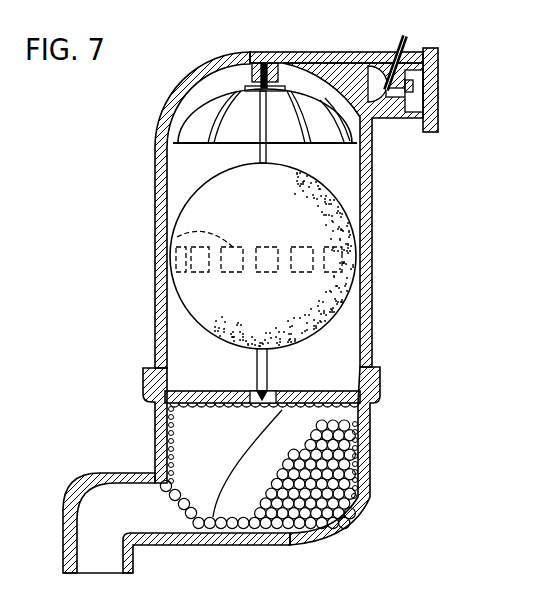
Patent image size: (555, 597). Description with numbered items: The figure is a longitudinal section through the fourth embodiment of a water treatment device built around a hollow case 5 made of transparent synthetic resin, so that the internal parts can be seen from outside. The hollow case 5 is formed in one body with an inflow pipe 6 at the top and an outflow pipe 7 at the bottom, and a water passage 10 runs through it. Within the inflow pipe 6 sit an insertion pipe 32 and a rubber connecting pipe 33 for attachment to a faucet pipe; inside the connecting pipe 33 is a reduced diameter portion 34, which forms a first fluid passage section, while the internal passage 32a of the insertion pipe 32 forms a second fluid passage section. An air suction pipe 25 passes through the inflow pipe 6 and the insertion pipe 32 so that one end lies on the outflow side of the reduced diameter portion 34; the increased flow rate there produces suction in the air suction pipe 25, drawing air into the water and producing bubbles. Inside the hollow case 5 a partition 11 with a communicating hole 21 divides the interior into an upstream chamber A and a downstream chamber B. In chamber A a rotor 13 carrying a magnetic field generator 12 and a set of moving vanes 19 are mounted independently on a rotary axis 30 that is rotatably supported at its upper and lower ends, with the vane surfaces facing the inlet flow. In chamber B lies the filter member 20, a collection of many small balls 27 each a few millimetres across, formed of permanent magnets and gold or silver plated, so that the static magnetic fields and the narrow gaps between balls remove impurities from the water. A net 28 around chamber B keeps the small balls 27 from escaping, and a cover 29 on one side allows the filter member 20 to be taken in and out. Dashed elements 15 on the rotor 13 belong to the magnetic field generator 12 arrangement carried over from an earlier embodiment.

The hollow case 5 is at (372, 322).
The inflow pipe 6 is at (330, 53).
The outflow pipe 7 is at (62, 517).
The water passage 10 is at (177, 165).
The partition 11 is at (337, 385).
The magnetic field generator 12 is at (103, 247).
The rotor 13 is at (349, 203).
The sensing elements 15 is at (200, 272).
The moving vanes 19 is at (203, 118).
The filter member 20 is at (200, 481).
The communicating hole 21 is at (242, 412).
The air suction pipe 25 is at (412, 42).
The small balls 27 is at (353, 520).
The net 28 is at (350, 430).
The cover 29 is at (292, 528).
The rotary axis 30 is at (272, 378).
The insertion pipe 32 is at (398, 128).
The internal passage 32a is at (403, 100).
The rubber connecting pipe 33 is at (440, 61).
The reduced diameter portion 34 is at (410, 90).
The chamber A is at (172, 356).
The chamber B is at (178, 437).